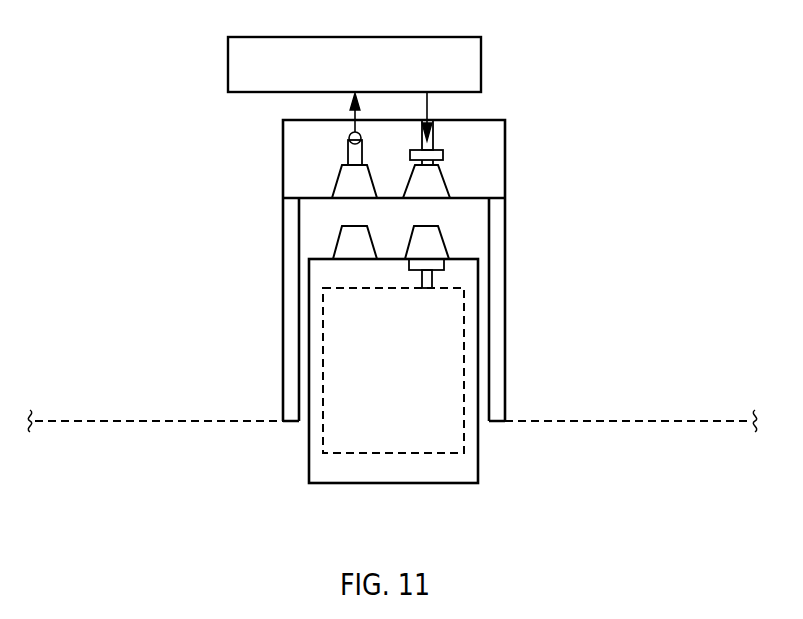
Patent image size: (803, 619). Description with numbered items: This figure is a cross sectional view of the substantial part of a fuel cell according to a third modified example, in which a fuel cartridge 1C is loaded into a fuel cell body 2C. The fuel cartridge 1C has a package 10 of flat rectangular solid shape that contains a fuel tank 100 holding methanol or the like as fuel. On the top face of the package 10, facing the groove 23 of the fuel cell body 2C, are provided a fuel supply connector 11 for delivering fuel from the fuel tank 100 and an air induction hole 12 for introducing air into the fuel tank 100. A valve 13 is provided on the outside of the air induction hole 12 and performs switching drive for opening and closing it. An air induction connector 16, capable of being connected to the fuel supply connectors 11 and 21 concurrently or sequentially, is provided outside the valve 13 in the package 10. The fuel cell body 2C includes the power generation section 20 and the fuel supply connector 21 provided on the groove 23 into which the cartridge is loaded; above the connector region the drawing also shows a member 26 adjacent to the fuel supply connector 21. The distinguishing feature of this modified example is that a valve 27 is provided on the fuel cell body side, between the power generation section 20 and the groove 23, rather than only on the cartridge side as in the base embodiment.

The power generation section 20 is at (383, 36).
The fuel supply connector 21 is at (350, 172).
The first terminal member 26 is at (420, 193).
The air induction connector 16 is at (420, 238).
The valve 27 is at (444, 155).
The groove 23 is at (464, 233).
The fuel supply connector 11 is at (352, 240).
The valve 13 is at (427, 265).
The air induction hole 12 is at (422, 279).
The package 10 is at (309, 392).
The fuel tank 100 is at (393, 453).
The fuel cartridge 1C is at (297, 464).
The fuel cell body 2C is at (634, 424).